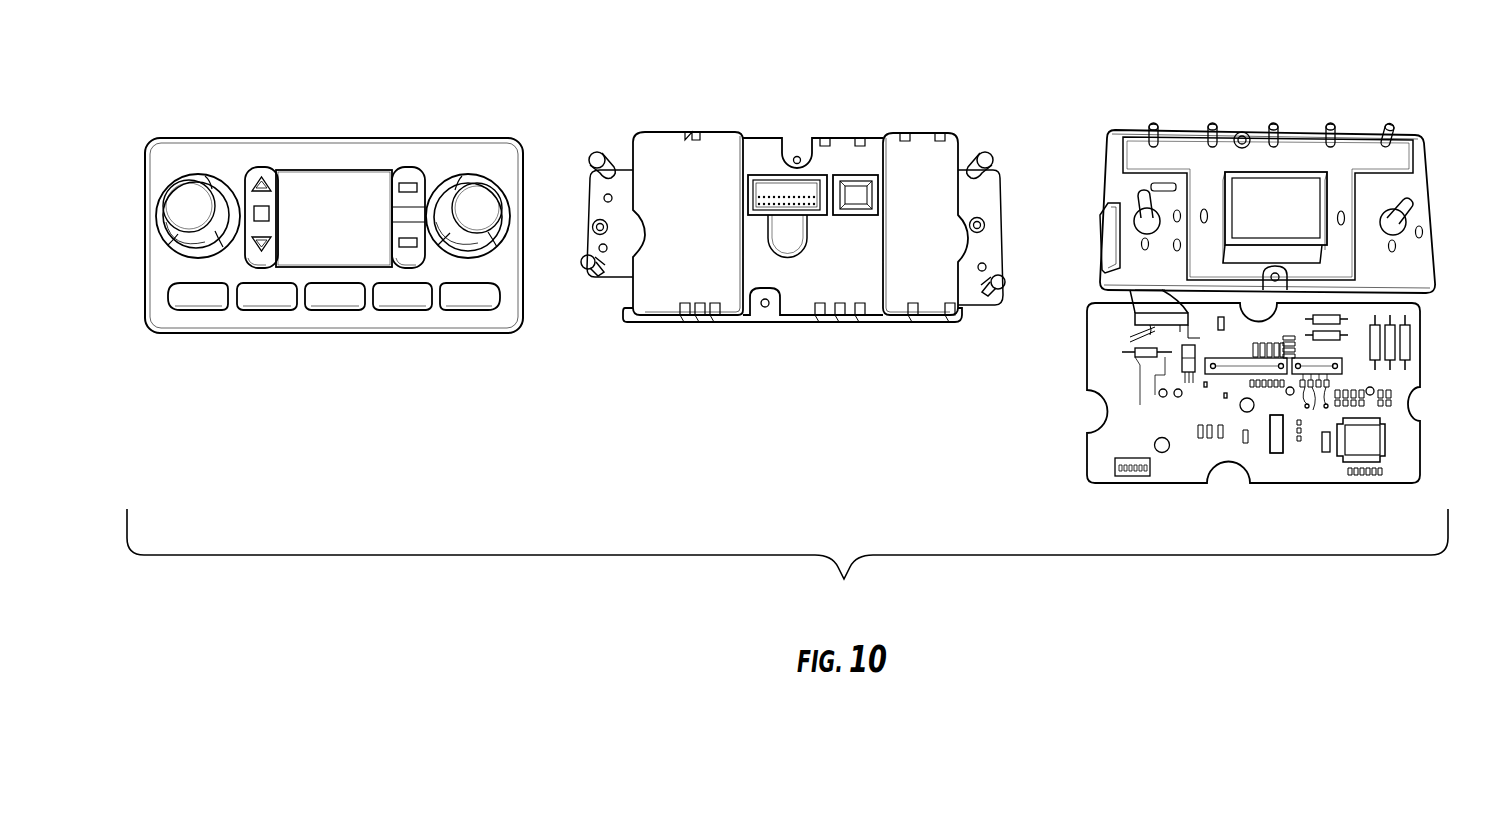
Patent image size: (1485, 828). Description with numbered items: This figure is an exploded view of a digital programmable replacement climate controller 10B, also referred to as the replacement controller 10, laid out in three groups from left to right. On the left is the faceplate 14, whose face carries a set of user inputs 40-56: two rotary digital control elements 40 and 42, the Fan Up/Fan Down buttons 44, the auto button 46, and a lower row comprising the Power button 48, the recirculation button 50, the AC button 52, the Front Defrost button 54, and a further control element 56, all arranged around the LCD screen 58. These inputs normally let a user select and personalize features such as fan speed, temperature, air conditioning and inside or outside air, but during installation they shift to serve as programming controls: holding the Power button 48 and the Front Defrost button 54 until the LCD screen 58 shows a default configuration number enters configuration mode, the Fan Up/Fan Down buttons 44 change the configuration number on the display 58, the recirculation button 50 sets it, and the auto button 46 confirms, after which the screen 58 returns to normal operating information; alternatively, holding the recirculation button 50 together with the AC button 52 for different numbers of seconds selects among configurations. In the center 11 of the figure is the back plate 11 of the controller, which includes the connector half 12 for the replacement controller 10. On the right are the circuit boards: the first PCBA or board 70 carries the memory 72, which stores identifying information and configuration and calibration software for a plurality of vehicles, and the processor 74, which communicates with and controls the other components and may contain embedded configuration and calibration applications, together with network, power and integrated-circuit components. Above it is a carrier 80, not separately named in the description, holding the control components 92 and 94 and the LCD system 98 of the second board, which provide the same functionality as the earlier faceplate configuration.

The replacement controller 10 is at (787, 561).
The digital programmable replacement climate controller 10B is at (352, 122).
The back plate 11 is at (758, 125).
The connector half 12 is at (771, 175).
The faceplate 14 is at (140, 192).
The digital control element 40 is at (207, 172).
The digital control element 42 is at (463, 176).
The fan up/fan down buttons 44 is at (263, 167).
The auto button 46 is at (402, 167).
The power button 48 is at (200, 312).
The recirculation button 50 is at (263, 312).
The AC button 52 is at (333, 312).
The front defrost button 54 is at (400, 312).
The digital control element 56 is at (470, 312).
The LCD screen 58 is at (319, 158).
The first PCBA 70 is at (1078, 353).
The memory 72 is at (1385, 458).
The processor 74 is at (1268, 442).
The light guide frame 80 is at (1128, 118).
The control component 92 is at (1137, 205).
The control component 94 is at (1404, 215).
The LCD system 98 is at (1288, 170).